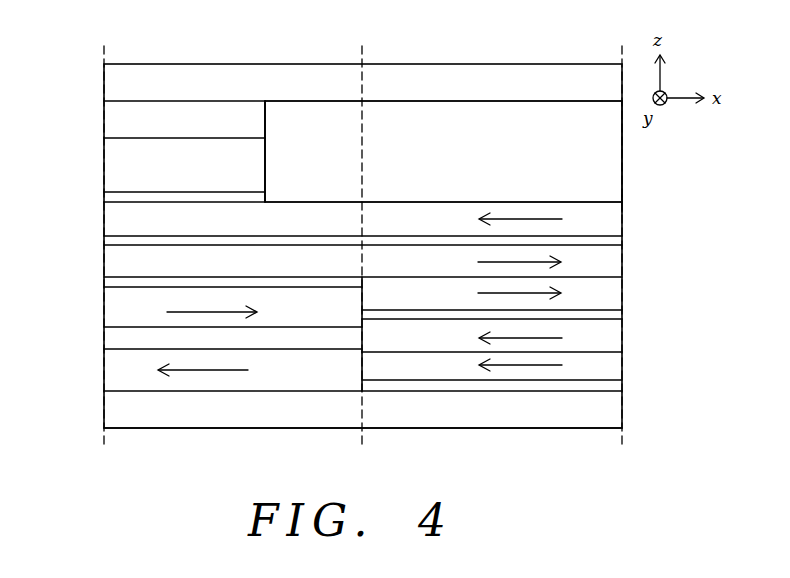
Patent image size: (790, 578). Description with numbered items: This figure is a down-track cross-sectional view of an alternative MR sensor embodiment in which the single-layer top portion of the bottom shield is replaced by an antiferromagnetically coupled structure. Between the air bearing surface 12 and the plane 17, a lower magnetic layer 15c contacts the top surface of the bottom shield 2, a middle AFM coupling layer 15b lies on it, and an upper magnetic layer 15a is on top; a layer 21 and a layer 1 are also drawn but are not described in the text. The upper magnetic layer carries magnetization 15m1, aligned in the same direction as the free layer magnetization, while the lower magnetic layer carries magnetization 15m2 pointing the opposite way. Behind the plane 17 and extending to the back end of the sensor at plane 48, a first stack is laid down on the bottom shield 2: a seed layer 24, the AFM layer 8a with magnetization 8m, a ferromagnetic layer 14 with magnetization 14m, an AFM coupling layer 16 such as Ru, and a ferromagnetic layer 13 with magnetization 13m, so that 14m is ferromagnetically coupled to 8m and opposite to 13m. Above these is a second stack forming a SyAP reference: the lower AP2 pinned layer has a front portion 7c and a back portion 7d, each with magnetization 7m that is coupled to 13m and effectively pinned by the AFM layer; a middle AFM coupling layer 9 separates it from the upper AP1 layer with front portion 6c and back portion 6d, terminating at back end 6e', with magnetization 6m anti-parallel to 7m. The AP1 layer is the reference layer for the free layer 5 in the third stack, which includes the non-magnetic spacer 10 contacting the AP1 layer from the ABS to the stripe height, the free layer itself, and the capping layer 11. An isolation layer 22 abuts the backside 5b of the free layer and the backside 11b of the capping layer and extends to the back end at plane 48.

The substrate 1 is at (118, 80).
The bottom shield 2 is at (605, 412).
The free layer 5 is at (118, 163).
The backside of the free layer 5b is at (266, 164).
The AP1 layer front portion 6c is at (118, 218).
The AP1 layer back portion 6d is at (605, 213).
The back end of AP1 back portion 6e' is at (648, 196).
The magnetization of AP1 layer 6m is at (501, 219).
The AP2 pinned layer front portion 7c is at (118, 265).
The AP2 pinned layer back portion 7d is at (605, 262).
The magnetization of AP2 layer 7m is at (500, 262).
The AFM layer 8a is at (605, 370).
The magnetization of AFM layer 8m is at (501, 365).
The middle AFM coupling layer 9 is at (118, 242).
The non-magnetic spacer 10 is at (113, 199).
The capping layer 11 is at (118, 118).
The backside of the capping layer 11b is at (266, 128).
The ABS 12 is at (103, 247).
The ferromagnetic layer 13 is at (605, 290).
The magnetization of ferromagnetic layer 13 13m is at (495, 293).
The ferromagnetic layer 14 is at (605, 338).
The magnetization of ferromagnetic layer 14 14m is at (496, 338).
The upper magnetic layer 15a is at (118, 312).
The middle AFM coupling layer 15b is at (118, 340).
The lower magnetic layer 15c is at (118, 370).
The magnetization of upper magnetic layer 15m1 is at (240, 312).
The magnetization of lower magnetic layer 15m2 is at (234, 370).
The AFM coupling layer 16 is at (605, 315).
The plane 17- 17 is at (363, 248).
The nonmagnetic layer 21 is at (118, 285).
The isolation layer 22 is at (605, 160).
The seed layer 24 is at (605, 385).
The plane 48- 48 is at (621, 248).